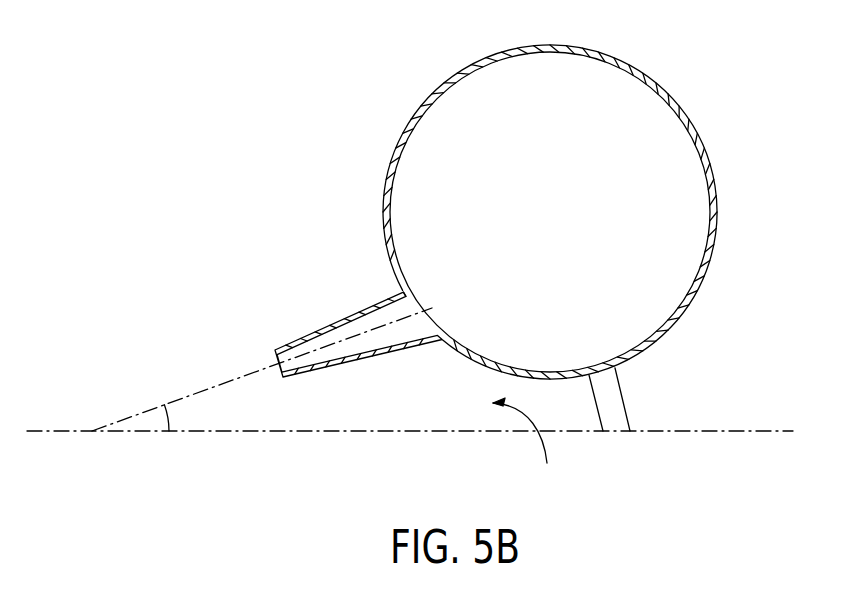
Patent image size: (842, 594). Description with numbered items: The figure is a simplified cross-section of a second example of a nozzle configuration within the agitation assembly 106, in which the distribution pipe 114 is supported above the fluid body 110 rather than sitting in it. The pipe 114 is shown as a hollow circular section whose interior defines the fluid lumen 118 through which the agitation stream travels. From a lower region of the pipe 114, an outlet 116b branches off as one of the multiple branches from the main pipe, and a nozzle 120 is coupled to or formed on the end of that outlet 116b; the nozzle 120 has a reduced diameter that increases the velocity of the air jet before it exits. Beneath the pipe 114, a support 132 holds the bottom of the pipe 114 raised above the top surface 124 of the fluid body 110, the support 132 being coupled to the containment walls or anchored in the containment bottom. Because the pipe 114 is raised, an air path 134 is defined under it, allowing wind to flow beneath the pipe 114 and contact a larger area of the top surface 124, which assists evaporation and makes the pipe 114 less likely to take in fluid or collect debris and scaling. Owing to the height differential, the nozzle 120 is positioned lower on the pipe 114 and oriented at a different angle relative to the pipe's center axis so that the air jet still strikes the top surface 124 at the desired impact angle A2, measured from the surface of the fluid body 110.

The agitation assembly 106 is at (672, 68).
The distribution pipe 114 is at (698, 130).
The fluid lumen 118 is at (565, 226).
The outlet 116b is at (423, 300).
The nozzle 120 is at (352, 309).
The top surface 124 is at (300, 431).
The fluid body 110 is at (258, 477).
The impact angle A2 is at (170, 412).
The support 132 is at (625, 403).
The air path 134 is at (529, 446).